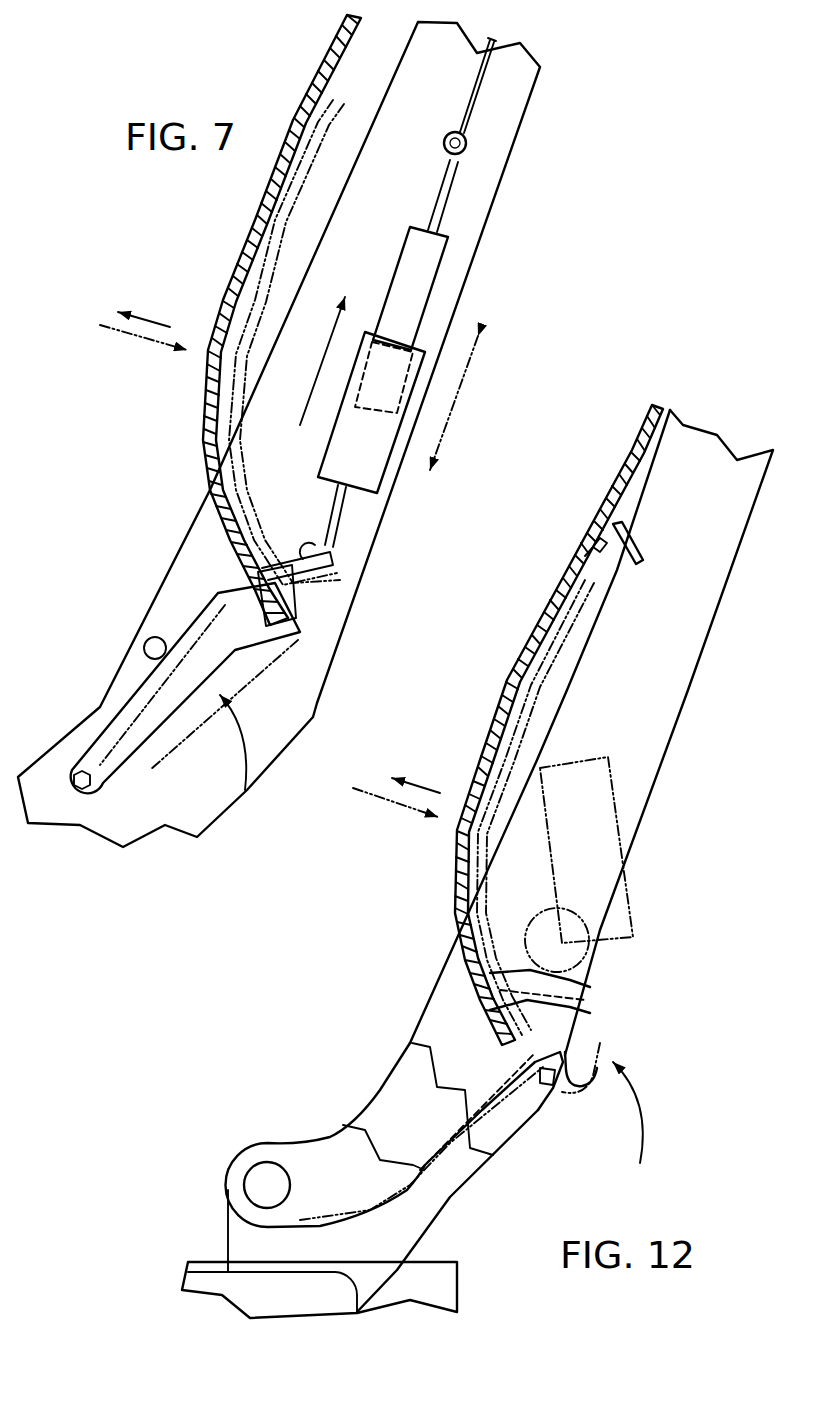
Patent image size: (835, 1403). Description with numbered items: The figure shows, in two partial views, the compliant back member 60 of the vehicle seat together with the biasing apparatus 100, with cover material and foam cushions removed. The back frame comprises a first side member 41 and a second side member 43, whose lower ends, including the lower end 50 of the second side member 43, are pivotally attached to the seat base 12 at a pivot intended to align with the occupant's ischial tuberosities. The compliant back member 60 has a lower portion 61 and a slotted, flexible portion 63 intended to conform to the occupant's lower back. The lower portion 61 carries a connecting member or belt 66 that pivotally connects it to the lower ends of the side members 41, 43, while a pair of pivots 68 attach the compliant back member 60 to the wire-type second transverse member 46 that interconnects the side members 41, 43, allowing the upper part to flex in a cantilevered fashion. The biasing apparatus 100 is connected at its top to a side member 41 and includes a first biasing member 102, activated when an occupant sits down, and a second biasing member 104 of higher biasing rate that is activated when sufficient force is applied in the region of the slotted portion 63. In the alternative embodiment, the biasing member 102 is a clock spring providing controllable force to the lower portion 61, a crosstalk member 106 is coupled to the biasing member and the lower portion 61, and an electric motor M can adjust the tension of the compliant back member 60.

In FIG. 7, the compliant back member 60 is at (325, 95).
In FIG. 12, the compliant back member 60 is at (600, 506).
In FIG. 7, the first side member 41 is at (498, 96).
In FIG. 12, the second side member 43 is at (690, 655).
In FIG. 7, the second biasing member 104 is at (450, 276).
In FIG. 7, the biasing apparatus 100 is at (436, 402).
In FIG. 7, the biasing member 102 is at (396, 483).
In FIG. 12, the biasing member 102 is at (560, 965).
In FIG. 7, the slotted, flexible portion 63 is at (190, 417).
In FIG. 12, the slotted, flexible portion 63 is at (440, 878).
In FIG. 7, the lower portion 61 is at (212, 579).
In FIG. 12, the lower portion 61 is at (470, 1020).
In FIG. 7, the connecting member or belt 66 is at (300, 604).
In FIG. 12, the connecting member or belt 66 is at (557, 983).
In FIG. 12, the second transverse member 46 is at (635, 557).
In FIG. 12, the pivots 68 is at (600, 567).
In FIG. 12, the electric motor M is at (620, 920).
In FIG. 12, the crosstalk member 106 is at (603, 1000).
In FIG. 12, the lower end 50 is at (277, 1131).
In FIG. 12, the seat base 12 is at (470, 1312).